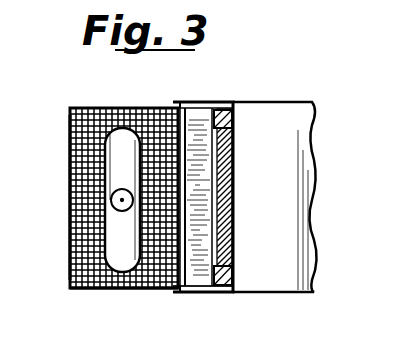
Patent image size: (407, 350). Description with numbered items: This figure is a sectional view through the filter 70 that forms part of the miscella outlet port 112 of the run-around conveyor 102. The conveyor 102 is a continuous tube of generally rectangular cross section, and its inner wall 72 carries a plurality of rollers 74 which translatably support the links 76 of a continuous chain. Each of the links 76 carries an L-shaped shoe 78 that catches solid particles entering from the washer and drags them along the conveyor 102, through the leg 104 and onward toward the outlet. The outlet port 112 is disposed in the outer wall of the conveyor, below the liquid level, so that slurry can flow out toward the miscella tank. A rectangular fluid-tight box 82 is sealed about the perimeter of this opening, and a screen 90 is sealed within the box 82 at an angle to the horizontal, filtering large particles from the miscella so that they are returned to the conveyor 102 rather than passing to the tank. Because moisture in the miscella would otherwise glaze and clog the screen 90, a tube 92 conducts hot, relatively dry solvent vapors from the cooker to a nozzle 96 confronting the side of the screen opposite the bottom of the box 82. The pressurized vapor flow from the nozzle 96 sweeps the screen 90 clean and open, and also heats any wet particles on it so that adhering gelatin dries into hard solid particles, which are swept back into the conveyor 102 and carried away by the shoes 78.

The filter 70 is at (67, 122).
The screen 90 is at (70, 172).
The fluid-tight box 82 is at (70, 236).
The nozzle 96 is at (122, 130).
The tube 92 is at (122, 184).
The inner wall 72 is at (235, 224).
The run-around conveyor 102 is at (236, 186).
The rollers 74 is at (233, 123).
The miscella outlet port 112 is at (210, 120).
The links 76 is at (214, 128).
The L-shaped shoe 78 is at (193, 292).
The leg 104 is at (0, 326).